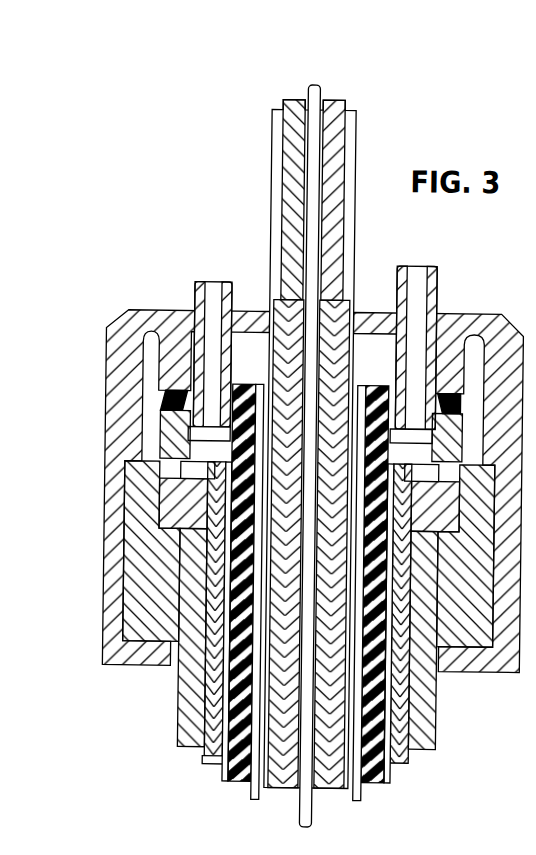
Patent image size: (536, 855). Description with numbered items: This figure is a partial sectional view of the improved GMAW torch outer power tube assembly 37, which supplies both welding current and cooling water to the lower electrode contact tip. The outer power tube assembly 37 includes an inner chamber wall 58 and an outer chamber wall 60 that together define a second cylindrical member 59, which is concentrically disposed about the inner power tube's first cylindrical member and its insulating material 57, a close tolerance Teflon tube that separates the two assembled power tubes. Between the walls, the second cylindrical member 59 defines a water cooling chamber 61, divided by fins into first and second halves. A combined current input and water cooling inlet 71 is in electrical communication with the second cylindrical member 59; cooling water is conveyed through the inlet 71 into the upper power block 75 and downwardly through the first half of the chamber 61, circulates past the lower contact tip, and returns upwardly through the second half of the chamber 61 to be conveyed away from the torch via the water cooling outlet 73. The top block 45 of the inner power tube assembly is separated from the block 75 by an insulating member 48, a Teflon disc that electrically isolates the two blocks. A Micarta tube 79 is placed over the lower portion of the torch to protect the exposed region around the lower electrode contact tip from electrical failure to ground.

The outer power tube assembly 37 is at (223, 766).
The top block 45 is at (172, 345).
The insulating member 48 is at (164, 402).
The insulating material 57 is at (245, 669).
The inner chamber wall 58 is at (240, 773).
The second cylindrical member 59 is at (218, 713).
The outer chamber wall 60 is at (215, 763).
The water cooling chamber 61 is at (229, 761).
The combined current input and water cooling inlet 71 is at (421, 267).
The water cooling outlet 73 is at (205, 294).
The block 75 is at (163, 439).
The Micarta tube 79 is at (431, 693).